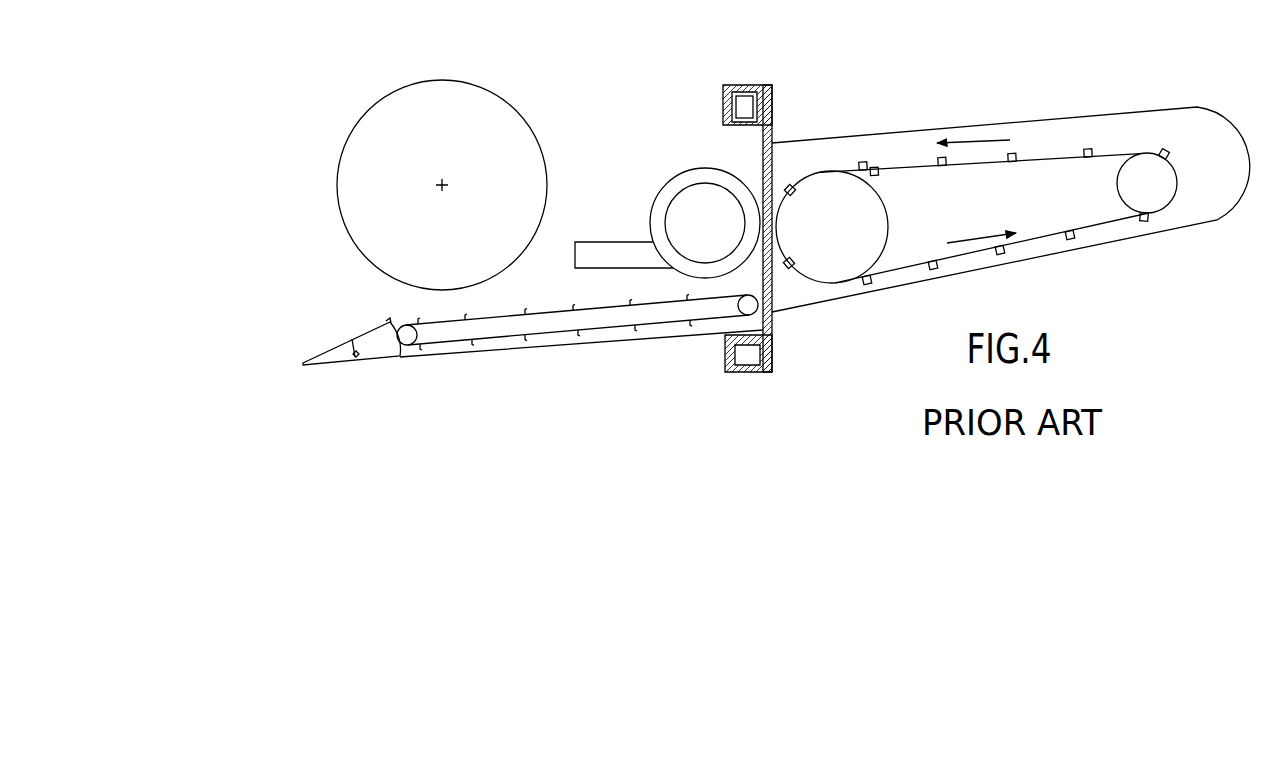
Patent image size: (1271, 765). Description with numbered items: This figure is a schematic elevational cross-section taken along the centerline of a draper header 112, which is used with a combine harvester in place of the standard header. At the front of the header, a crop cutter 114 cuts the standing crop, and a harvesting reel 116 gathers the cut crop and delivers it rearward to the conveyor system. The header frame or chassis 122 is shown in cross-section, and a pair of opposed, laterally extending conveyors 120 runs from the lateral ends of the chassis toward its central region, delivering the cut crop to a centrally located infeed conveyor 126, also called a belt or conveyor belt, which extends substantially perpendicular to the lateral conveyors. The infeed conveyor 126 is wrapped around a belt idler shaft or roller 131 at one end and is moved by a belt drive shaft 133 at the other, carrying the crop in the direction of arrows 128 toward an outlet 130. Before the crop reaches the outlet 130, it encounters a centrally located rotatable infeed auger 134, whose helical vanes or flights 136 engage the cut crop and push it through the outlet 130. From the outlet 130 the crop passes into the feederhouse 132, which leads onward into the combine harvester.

The draper header 112 is at (252, 143).
The crop cutter 114 is at (323, 352).
The harvesting reel 116 is at (372, 105).
The conveyors 120 is at (617, 242).
The header frame or chassis 122 is at (756, 81).
The infeed conveyor 126 is at (493, 342).
The arrows 128 is at (597, 292).
The outlet 130 is at (762, 170).
The belt drive shaft 131 is at (406, 338).
The feederhouse 132 is at (922, 126).
The belt drive shaft 133 is at (740, 307).
The infeed auger 134 is at (693, 236).
The helical vanes or flights 136 is at (668, 186).